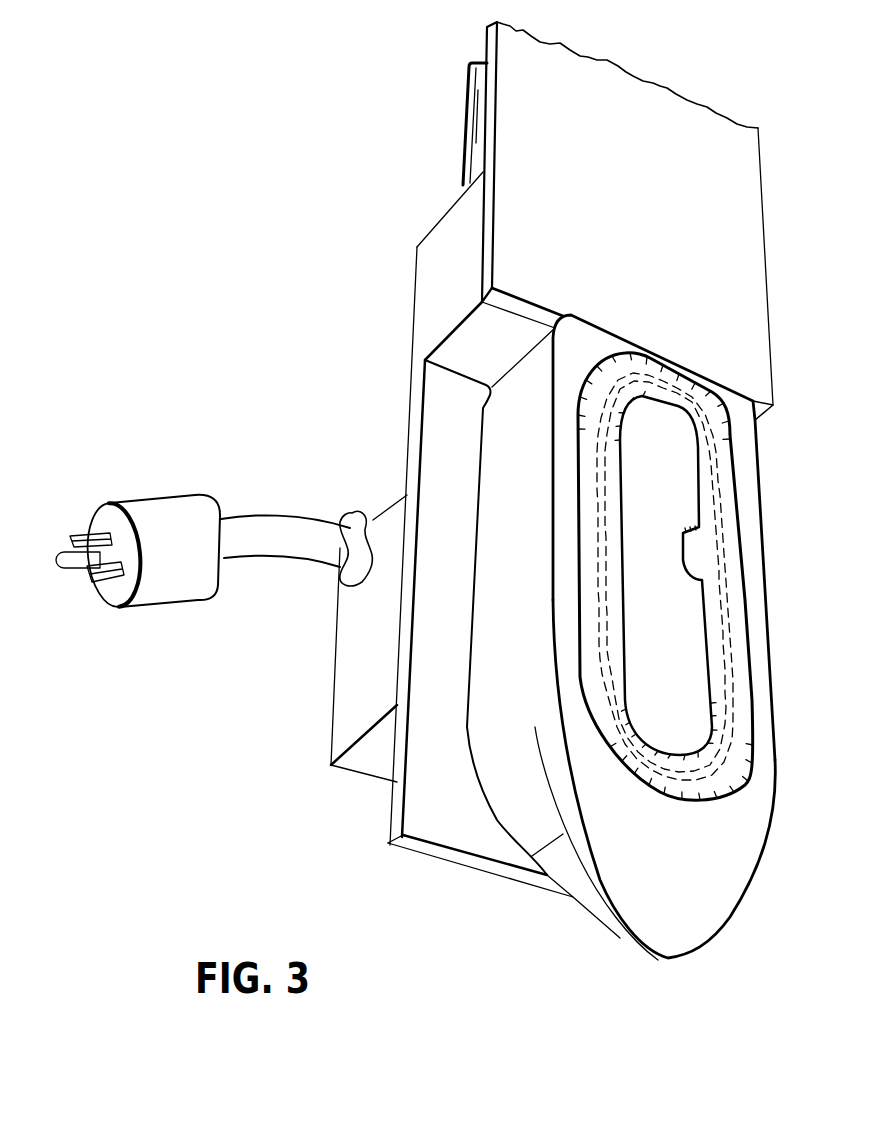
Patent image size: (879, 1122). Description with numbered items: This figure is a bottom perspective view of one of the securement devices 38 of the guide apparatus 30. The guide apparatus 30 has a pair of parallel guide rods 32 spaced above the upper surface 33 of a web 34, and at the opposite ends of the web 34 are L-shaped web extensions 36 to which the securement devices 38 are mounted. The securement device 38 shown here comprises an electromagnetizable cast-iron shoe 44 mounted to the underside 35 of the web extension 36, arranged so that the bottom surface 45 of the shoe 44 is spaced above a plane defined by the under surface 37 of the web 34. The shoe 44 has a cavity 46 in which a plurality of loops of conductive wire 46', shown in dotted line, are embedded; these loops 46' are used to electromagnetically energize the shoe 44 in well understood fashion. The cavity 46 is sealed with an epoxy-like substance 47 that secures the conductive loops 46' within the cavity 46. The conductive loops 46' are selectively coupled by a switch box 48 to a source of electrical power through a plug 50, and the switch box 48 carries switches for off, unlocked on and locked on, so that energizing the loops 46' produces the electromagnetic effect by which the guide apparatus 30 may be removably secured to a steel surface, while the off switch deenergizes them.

The guide apparatus 30 is at (432, 147).
The guide rod 32 is at (466, 113).
The upper surface of web 33 is at (487, 50).
The web 34 is at (657, 84).
The underside of web extension 35 is at (437, 450).
The L-shaped web extension 36 is at (410, 408).
The under surface of web 37 is at (676, 256).
The securement device 38 is at (482, 885).
The electromagnetizable cast-iron shoe 44 is at (661, 903).
The bottom surface of shoe 45 is at (686, 858).
The cavity 46 is at (665, 594).
The loops of conductive wire 46' is at (617, 576).
The epoxy-like substance 47 is at (720, 598).
The switch box 48 is at (352, 688).
The plug 50 is at (162, 605).